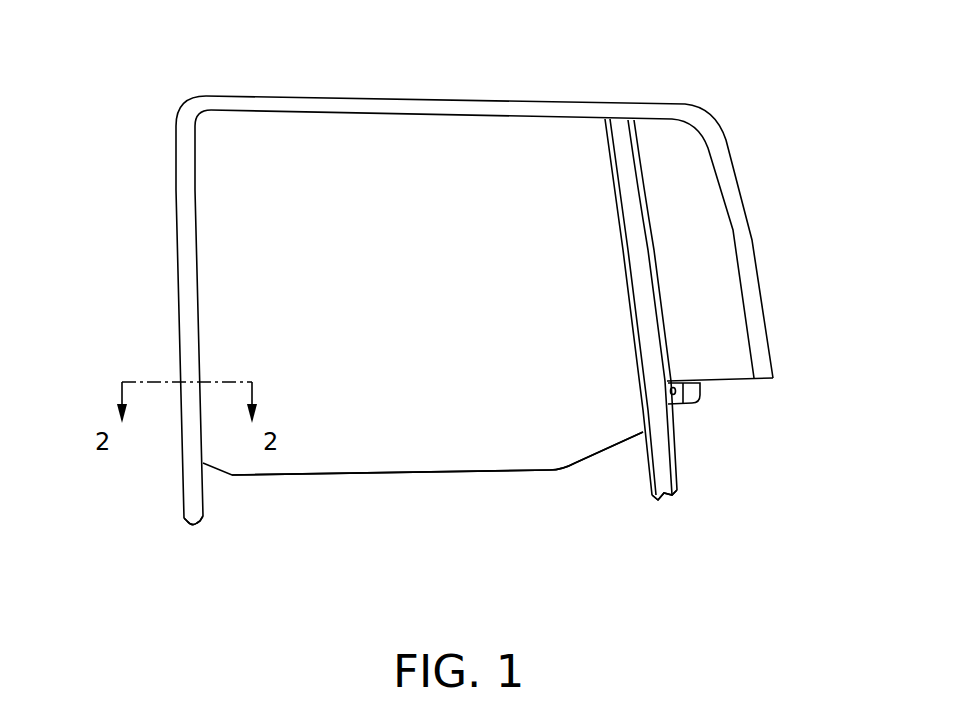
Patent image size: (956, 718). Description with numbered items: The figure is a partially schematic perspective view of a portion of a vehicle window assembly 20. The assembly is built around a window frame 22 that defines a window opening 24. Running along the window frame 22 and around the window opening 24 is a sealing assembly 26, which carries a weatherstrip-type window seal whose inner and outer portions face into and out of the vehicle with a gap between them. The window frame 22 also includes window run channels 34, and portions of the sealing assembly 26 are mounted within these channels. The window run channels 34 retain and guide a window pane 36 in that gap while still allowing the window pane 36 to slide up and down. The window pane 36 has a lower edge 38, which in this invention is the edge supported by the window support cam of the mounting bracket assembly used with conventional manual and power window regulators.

The vehicle window assembly 20 is at (736, 72).
The window frame 22 is at (176, 172).
The window opening 24 is at (449, 295).
The sealing assembly 26 is at (590, 152).
The window run channels 34 is at (203, 513).
The window pane 36 is at (507, 472).
The lower edge 38 is at (350, 473).